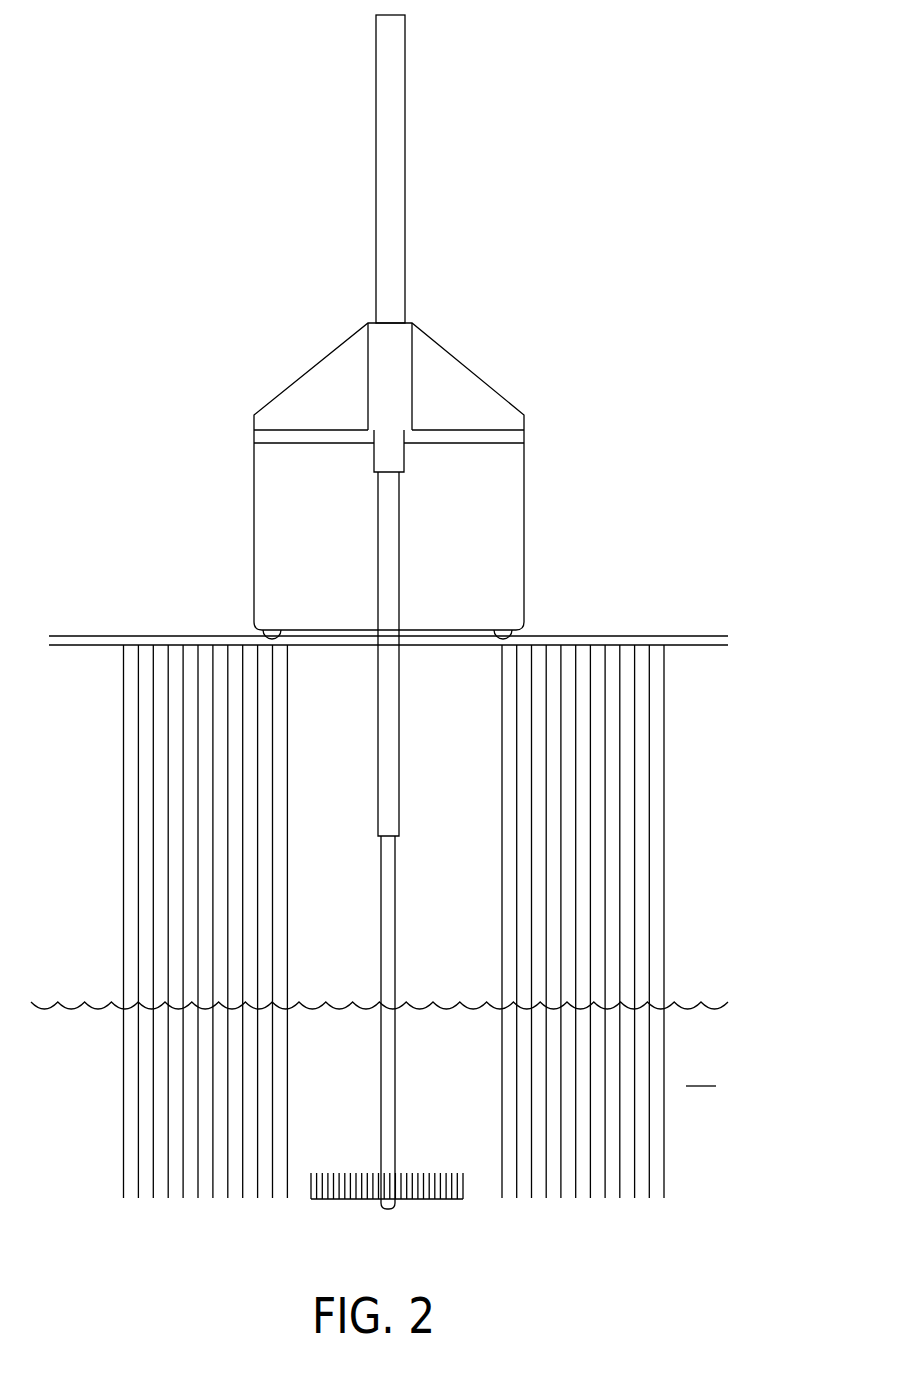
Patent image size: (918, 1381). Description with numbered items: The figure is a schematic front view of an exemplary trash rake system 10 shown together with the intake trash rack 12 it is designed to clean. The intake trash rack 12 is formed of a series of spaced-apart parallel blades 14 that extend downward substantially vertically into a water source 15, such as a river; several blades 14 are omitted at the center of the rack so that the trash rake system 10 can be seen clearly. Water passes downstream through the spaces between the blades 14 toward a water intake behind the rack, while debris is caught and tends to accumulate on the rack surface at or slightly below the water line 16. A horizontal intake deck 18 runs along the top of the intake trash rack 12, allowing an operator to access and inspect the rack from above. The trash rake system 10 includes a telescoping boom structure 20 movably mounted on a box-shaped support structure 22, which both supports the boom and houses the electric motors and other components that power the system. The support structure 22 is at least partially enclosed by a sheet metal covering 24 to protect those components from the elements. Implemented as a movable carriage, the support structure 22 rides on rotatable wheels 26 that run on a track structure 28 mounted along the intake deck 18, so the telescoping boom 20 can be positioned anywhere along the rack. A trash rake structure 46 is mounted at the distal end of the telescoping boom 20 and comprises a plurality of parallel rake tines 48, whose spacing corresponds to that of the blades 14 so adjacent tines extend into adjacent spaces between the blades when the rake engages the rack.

The trash rake system 10 is at (538, 276).
The intake trash rack 12 is at (703, 819).
The blades 14 is at (665, 922).
The water source 15 is at (703, 1073).
The water line 16 is at (690, 1008).
The intake deck 18 is at (697, 636).
The telescoping boom structure 20 is at (409, 166).
The support structure 22 is at (528, 530).
The covering 24 is at (483, 398).
The rotatable wheels 26 is at (525, 636).
The track structure 28 is at (614, 636).
The trash rake structure 46 is at (426, 1199).
The rake tines 48 is at (350, 1173).